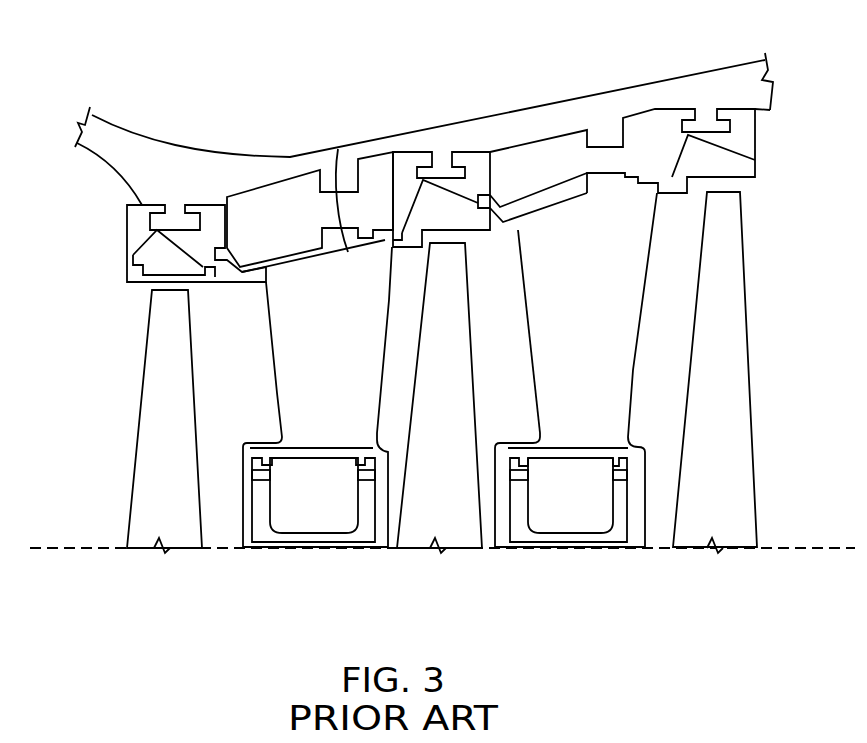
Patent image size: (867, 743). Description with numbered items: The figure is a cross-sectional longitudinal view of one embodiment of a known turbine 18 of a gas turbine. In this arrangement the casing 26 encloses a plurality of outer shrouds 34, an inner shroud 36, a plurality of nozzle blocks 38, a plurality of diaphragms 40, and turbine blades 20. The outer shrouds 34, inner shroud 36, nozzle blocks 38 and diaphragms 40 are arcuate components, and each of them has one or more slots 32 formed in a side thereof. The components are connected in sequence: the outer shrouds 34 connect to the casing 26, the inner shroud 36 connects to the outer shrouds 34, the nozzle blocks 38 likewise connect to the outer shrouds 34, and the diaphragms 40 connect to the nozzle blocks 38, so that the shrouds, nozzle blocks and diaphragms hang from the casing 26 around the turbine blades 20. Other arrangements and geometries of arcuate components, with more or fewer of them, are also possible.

The turbine 18 is at (94, 78).
The turbine blades 20 is at (136, 435).
The casing 26 is at (607, 92).
The slots 32 is at (547, 193).
The outer shrouds 34 is at (417, 172).
The inner shroud 36 is at (134, 286).
The nozzle blocks 38 is at (300, 250).
The diaphragms 40 is at (283, 550).